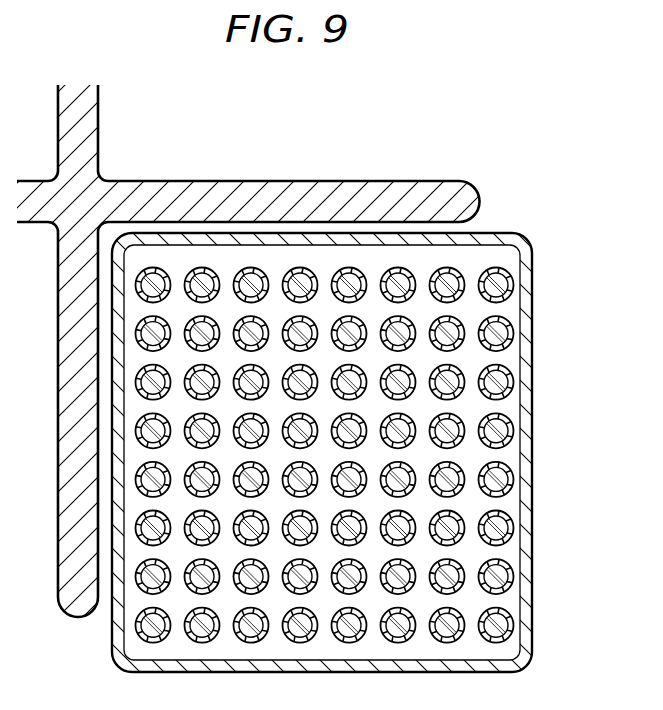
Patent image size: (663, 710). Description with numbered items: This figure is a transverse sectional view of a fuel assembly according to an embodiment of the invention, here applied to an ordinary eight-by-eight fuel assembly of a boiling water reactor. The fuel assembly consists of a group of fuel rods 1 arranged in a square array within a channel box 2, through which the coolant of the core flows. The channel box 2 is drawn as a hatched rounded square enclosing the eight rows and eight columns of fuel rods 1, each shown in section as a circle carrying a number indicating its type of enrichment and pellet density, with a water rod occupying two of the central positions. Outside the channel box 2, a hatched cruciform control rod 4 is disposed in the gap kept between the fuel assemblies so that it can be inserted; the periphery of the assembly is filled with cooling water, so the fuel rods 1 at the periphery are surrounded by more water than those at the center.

The fuel rods 1 is at (510, 418).
The channel box 2 is at (527, 255).
The control rod 4 is at (416, 186).